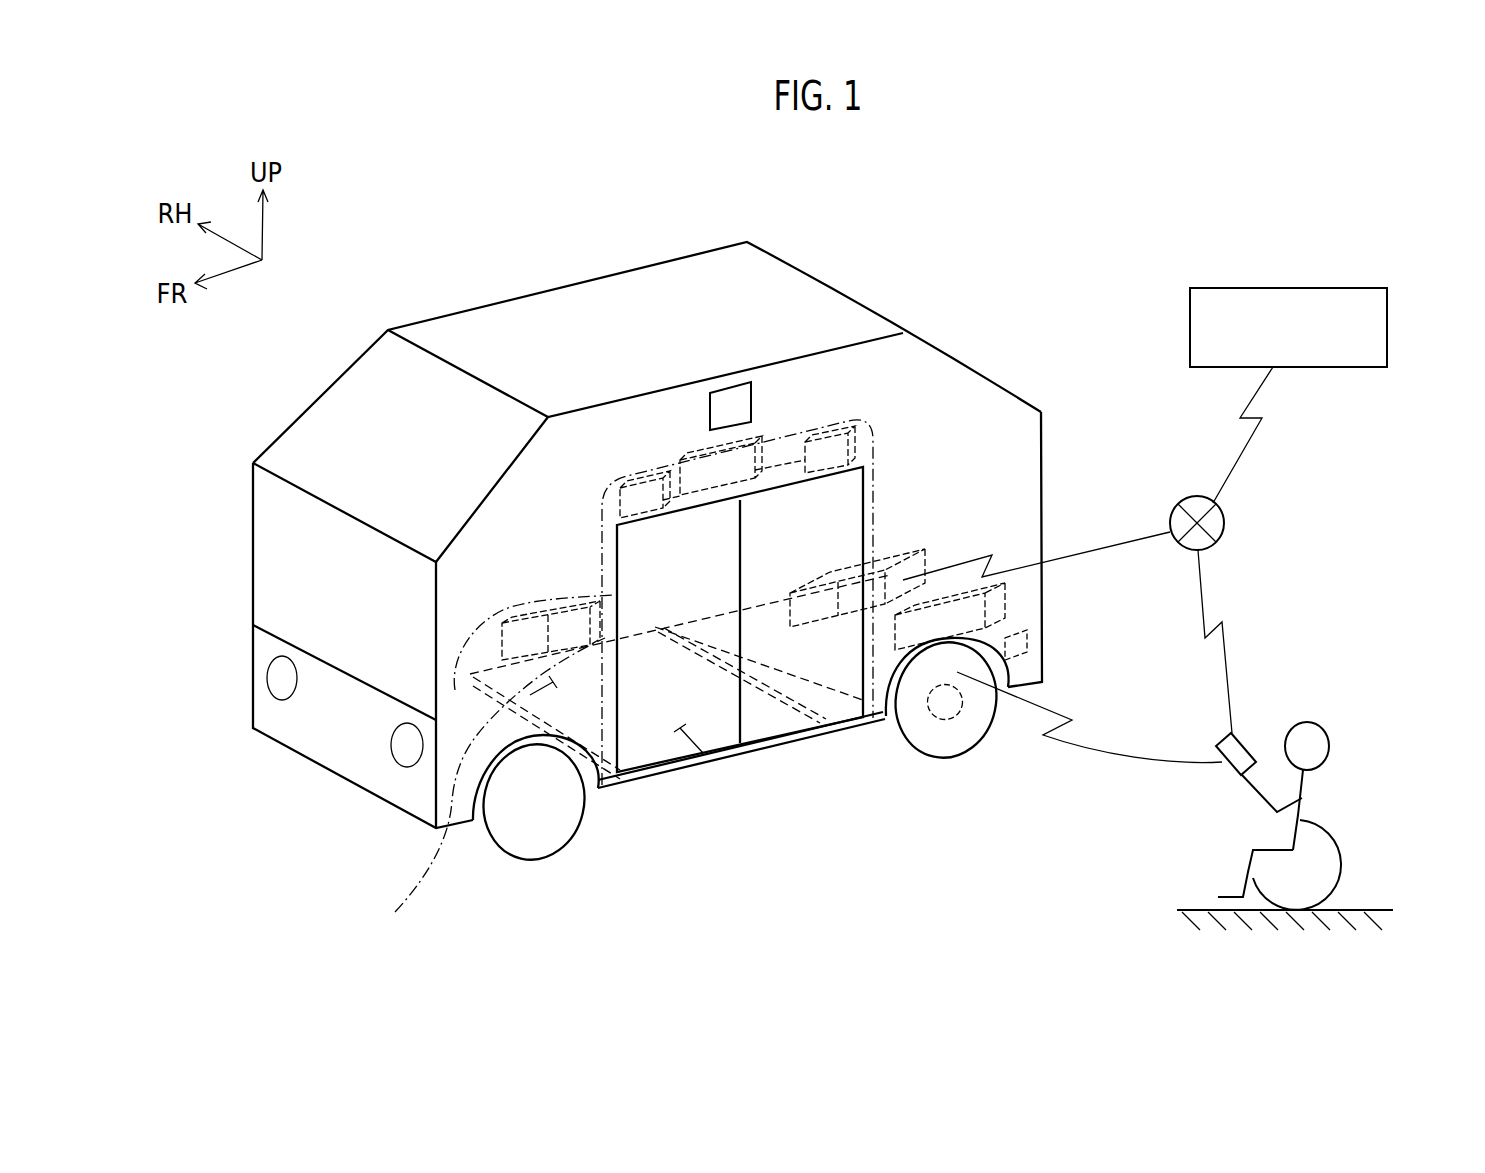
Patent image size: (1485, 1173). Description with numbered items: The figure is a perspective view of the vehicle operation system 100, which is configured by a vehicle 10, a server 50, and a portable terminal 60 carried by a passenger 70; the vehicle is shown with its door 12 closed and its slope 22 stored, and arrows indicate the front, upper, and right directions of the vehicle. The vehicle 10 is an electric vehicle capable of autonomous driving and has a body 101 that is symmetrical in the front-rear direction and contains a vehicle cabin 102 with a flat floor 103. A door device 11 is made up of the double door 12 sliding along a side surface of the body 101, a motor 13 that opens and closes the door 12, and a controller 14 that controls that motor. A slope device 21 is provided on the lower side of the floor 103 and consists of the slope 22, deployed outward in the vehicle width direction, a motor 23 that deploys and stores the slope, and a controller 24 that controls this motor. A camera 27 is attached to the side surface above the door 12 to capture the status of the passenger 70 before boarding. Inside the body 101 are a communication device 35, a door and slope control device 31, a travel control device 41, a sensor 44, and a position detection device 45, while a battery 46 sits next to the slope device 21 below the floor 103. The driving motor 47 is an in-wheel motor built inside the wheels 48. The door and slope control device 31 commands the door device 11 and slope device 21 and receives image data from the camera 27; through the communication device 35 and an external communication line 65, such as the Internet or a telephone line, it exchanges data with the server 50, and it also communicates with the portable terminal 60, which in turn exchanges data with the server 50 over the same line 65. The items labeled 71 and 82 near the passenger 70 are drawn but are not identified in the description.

The vehicle operation system 100 is at (206, 461).
The vehicle 10 is at (537, 307).
The door device 11 is at (783, 750).
The door 12 is at (713, 763).
The motor 13 is at (607, 490).
The controller 14 is at (775, 425).
The slope device 21 is at (787, 747).
The slope 22 is at (680, 780).
The motor 23 is at (535, 603).
The controller 24 is at (560, 605).
The camera 27 is at (753, 400).
The door and slope control device 31 is at (913, 583).
The communication device 35 is at (933, 577).
The travel control device 41 is at (947, 618).
The sensor 44 is at (1028, 641).
The position detection device 45 is at (942, 613).
The battery 46 is at (850, 732).
The driving motor 47 is at (965, 705).
The wheels 48 is at (960, 755).
The server 50 is at (1313, 288).
The portable terminal 60 is at (1247, 742).
The communication line 65 is at (1224, 519).
The passenger 70 is at (1302, 812).
The wheelchair 71 is at (1343, 866).
The ground 82 is at (1365, 910).
The body 101 is at (678, 257).
The vehicle cabin 102 is at (484, 792).
The floor 103 is at (875, 605).